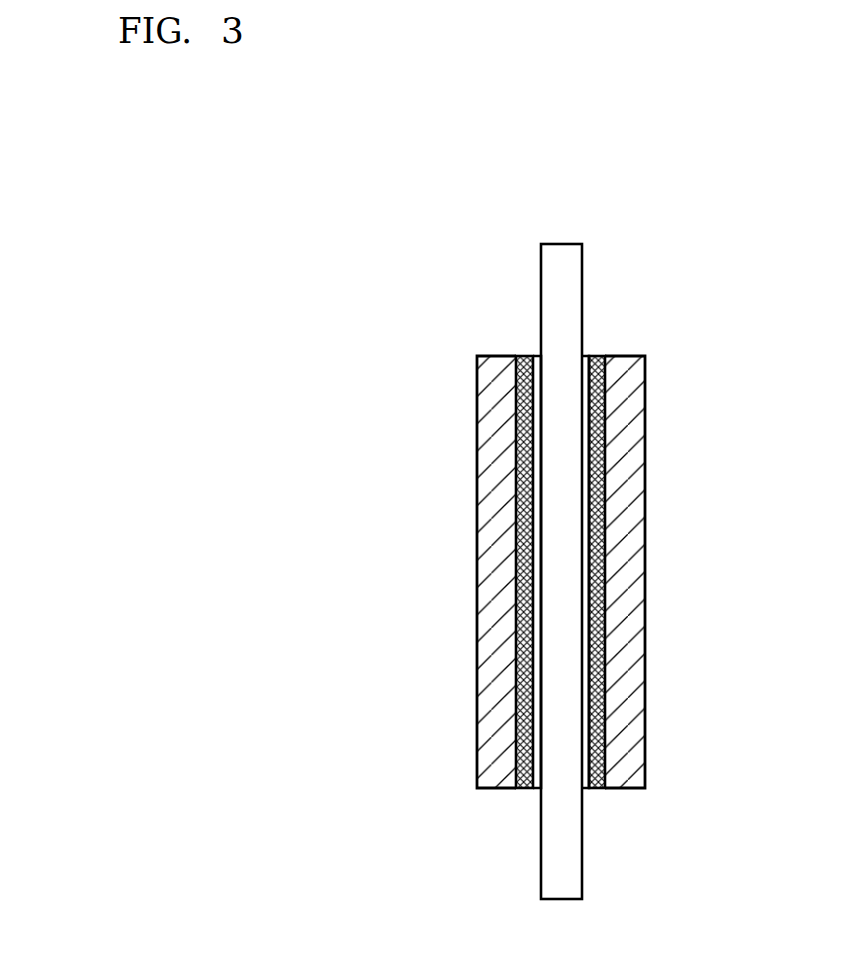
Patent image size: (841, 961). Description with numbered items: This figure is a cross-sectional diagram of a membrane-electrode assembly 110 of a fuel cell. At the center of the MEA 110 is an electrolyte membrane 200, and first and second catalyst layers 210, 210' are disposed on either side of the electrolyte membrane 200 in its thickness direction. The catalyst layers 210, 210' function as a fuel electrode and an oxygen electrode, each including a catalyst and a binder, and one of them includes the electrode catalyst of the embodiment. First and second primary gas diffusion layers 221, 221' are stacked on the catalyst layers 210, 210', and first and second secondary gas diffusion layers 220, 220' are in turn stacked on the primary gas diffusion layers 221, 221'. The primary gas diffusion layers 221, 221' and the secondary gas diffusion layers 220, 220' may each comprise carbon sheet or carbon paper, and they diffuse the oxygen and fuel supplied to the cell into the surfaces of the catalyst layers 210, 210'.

The membrane-electrode assembly 110 is at (428, 262).
The electrolyte membrane 200 is at (560, 250).
The first catalyst layer 210 is at (515, 609).
The second catalyst layer 210' is at (609, 609).
The first secondary gas diffusion layer 220 is at (446, 572).
The second secondary gas diffusion layer 220' is at (678, 572).
The first primary gas diffusion layer 221 is at (505, 536).
The second primary gas diffusion layer 221' is at (618, 536).